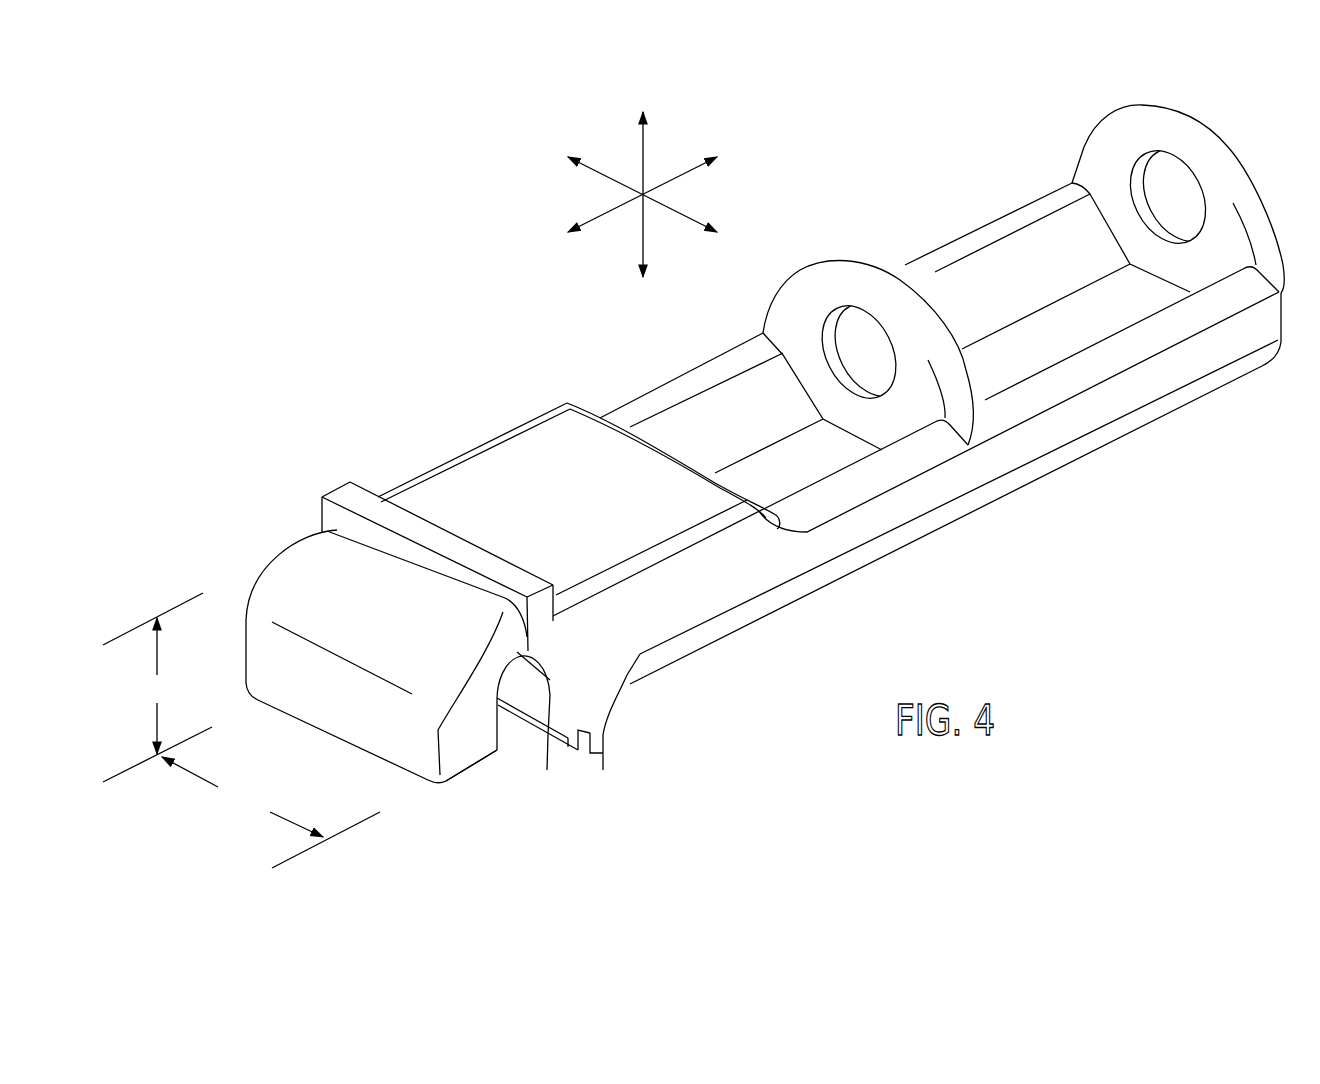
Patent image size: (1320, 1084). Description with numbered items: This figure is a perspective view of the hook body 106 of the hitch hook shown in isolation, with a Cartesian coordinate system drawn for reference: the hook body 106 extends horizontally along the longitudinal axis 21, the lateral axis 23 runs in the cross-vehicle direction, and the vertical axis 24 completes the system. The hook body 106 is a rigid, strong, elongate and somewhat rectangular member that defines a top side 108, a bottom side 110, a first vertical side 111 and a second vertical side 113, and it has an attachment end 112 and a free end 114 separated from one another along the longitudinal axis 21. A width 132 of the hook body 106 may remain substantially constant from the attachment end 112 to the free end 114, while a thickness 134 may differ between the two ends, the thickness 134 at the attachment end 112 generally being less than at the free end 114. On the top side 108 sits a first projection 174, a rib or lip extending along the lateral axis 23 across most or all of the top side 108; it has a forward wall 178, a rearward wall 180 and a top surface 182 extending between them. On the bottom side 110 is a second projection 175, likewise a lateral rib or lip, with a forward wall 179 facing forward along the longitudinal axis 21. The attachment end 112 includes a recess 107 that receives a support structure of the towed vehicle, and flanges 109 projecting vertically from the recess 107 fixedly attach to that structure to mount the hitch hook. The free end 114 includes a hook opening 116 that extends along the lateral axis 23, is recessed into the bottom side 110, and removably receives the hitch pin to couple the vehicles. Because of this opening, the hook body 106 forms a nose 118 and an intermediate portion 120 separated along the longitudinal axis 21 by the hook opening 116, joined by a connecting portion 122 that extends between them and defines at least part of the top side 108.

The longitudinal axis 21 is at (683, 176).
The lateral axis 23 is at (595, 170).
The vertical axis 24 is at (645, 152).
The hook body 106 is at (416, 351).
The recess 107 is at (1057, 333).
The top side 108 is at (594, 492).
The flanges 109 is at (797, 313).
The bottom side 110 is at (688, 657).
The first vertical side 111 is at (740, 583).
The attachment end 112 is at (1217, 173).
The second vertical side 113 is at (658, 387).
The free end 114 is at (340, 693).
The hook opening 116 is at (515, 733).
The nose 118 is at (468, 733).
The intermediate portion 120 is at (587, 695).
The connecting portion 122 is at (547, 770).
The width 132 is at (271, 812).
The thickness 134 is at (157, 687).
The first projection 174 is at (350, 502).
The second projection 175 is at (592, 732).
The forward wall 178 is at (423, 560).
The forward wall 179 is at (567, 747).
The rearward wall 180 is at (472, 543).
The top surface 182 is at (418, 533).